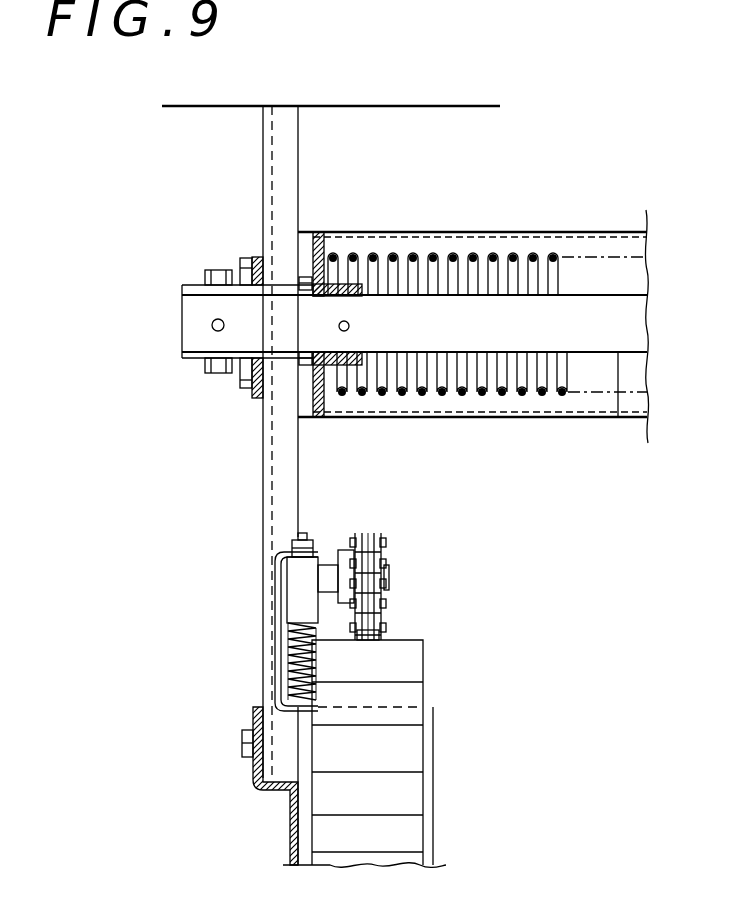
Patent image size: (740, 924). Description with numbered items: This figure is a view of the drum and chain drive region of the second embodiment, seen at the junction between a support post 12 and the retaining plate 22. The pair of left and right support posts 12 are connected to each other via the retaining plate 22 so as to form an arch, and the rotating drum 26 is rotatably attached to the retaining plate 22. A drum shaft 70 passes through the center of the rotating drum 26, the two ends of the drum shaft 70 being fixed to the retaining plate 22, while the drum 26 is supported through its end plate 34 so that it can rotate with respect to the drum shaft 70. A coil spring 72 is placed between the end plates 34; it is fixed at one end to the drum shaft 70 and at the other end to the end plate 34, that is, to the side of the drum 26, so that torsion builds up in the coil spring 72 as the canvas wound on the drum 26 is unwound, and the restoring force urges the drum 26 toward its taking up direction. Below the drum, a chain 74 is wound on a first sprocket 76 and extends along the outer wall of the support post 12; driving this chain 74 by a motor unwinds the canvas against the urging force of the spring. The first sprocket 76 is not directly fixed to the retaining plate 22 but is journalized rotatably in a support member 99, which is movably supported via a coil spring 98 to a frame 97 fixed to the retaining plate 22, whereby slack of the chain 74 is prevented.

The support post 12 is at (440, 812).
The retaining plate 22 is at (263, 478).
The rotating drum 26 is at (600, 232).
The end plate 34 is at (314, 242).
The drum shaft 70 is at (618, 417).
The coil spring 72 is at (489, 395).
The chain 74 is at (370, 540).
The first sprocket 76 is at (343, 550).
The frame 97 is at (273, 622).
The coil spring 98 is at (288, 664).
The support member 99 is at (295, 580).